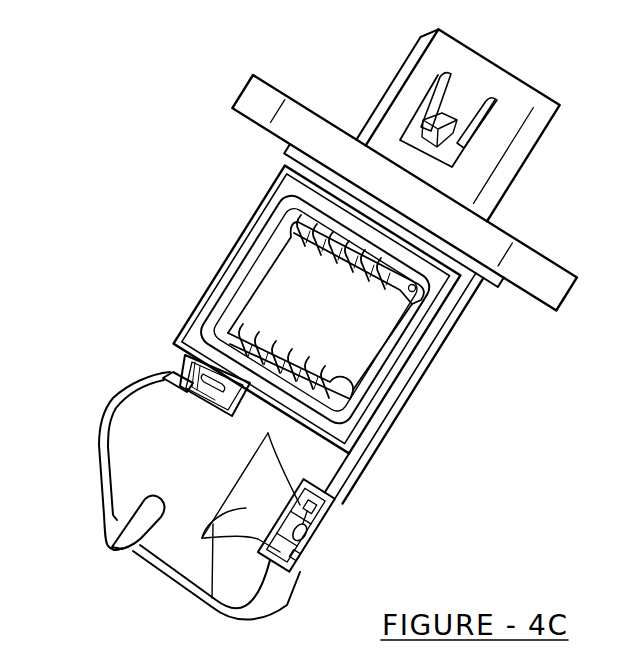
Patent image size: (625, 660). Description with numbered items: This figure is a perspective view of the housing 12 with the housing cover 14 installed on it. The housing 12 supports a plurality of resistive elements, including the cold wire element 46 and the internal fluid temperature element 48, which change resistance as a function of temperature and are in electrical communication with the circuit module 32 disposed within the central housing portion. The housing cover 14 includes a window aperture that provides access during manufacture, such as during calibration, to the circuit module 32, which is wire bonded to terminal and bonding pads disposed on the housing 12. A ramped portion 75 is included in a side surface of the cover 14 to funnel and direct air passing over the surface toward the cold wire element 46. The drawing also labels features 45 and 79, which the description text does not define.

The housing 12 is at (357, 473).
The housing cover 14 is at (287, 182).
The circuit module 32 is at (332, 336).
The clip lever 45 is at (100, 477).
The cold wire element 46 is at (165, 377).
The internal fluid temperature (IAT) element 48 is at (308, 534).
The ramped portion 75 is at (201, 597).
The spring contacts 79 is at (248, 334).